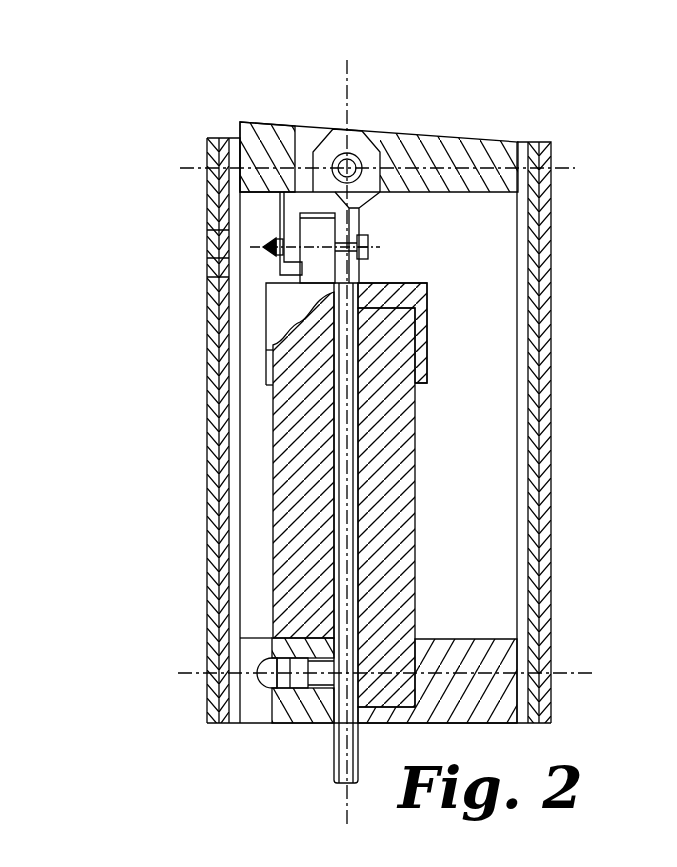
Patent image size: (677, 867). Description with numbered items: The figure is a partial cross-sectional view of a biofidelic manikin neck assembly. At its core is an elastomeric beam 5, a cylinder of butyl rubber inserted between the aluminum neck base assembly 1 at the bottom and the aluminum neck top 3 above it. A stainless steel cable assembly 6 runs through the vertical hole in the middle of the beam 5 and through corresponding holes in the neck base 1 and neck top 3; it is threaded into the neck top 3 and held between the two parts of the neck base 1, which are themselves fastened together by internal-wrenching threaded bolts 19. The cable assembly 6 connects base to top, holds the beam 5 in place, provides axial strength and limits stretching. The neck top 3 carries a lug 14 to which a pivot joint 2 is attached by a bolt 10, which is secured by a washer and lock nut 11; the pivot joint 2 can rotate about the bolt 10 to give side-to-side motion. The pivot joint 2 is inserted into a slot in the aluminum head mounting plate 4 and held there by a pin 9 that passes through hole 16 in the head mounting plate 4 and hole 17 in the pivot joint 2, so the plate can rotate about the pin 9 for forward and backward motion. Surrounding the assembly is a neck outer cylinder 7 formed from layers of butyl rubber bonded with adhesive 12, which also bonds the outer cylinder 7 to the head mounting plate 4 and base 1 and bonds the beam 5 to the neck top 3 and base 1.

The neck base assembly 1 is at (252, 727).
The pivot joint 2 is at (360, 155).
The neck top 3 is at (428, 323).
The head mounting plate 4 is at (238, 122).
The elastomeric beam 5 is at (418, 417).
The cable assembly 6 is at (338, 785).
The neck outer cylinder 7 is at (208, 488).
The pin 9 is at (352, 153).
The bolt 10 is at (371, 245).
The lock nut 11 is at (362, 247).
The adhesive 12 is at (540, 168).
The lug 14 is at (305, 230).
The hole 16 is at (328, 127).
The hole 17 is at (297, 125).
The threaded bolts 19 is at (372, 498).